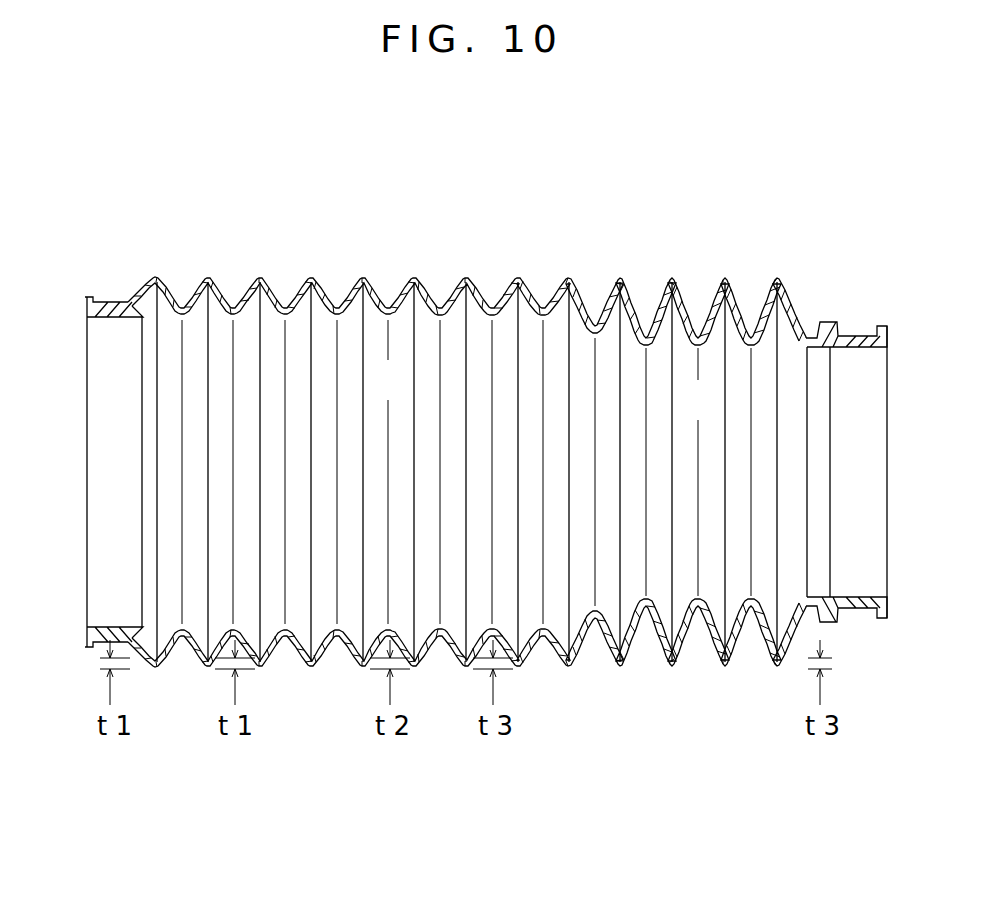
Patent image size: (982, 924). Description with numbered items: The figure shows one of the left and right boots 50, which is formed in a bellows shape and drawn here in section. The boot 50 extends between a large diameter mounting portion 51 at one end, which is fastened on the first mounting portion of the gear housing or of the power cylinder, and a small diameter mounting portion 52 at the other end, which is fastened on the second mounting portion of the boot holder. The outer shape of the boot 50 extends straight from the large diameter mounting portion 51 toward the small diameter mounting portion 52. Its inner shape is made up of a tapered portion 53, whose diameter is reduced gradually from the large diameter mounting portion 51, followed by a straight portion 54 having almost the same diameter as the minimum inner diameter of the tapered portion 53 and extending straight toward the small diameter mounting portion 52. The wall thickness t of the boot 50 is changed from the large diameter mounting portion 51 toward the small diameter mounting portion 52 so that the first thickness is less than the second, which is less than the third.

The boot 50 is at (358, 270).
The large diameter mounting portion 51 is at (120, 303).
The small diameter mounting portion 52 is at (845, 330).
The tapered portion 53 is at (143, 337).
The straight portion 54 is at (795, 358).